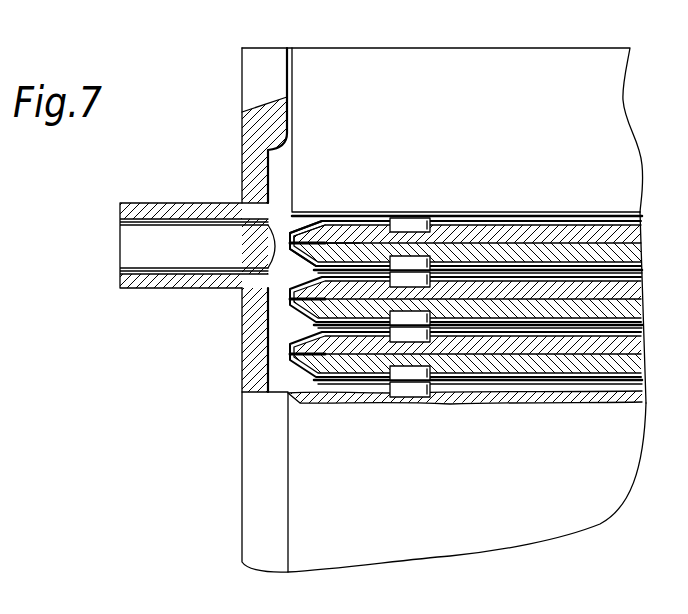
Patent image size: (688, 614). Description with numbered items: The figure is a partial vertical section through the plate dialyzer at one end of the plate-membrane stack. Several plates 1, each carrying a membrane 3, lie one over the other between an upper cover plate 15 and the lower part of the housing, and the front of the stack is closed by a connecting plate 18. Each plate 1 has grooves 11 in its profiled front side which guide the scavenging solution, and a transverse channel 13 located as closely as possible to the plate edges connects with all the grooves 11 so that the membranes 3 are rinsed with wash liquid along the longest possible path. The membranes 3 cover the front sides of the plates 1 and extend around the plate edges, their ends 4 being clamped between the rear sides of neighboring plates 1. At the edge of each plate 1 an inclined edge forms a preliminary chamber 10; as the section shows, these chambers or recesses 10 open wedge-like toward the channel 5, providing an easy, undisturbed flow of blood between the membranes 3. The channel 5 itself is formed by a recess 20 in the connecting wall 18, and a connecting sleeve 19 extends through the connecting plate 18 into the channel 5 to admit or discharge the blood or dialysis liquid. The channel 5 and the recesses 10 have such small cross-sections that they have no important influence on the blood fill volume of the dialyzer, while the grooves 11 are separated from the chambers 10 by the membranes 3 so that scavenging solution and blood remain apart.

The plate 1 is at (363, 237).
The membrane 3 is at (293, 228).
The membrane end 4 is at (327, 237).
The channel 5 is at (280, 375).
The preliminary chamber 10 is at (307, 328).
The groove 11 is at (513, 268).
The transverse channel 13 is at (447, 240).
The cover plate 15 is at (462, 72).
The connecting plate 18 is at (270, 80).
The connecting sleeve 19 is at (170, 236).
The recess 20 is at (262, 364).